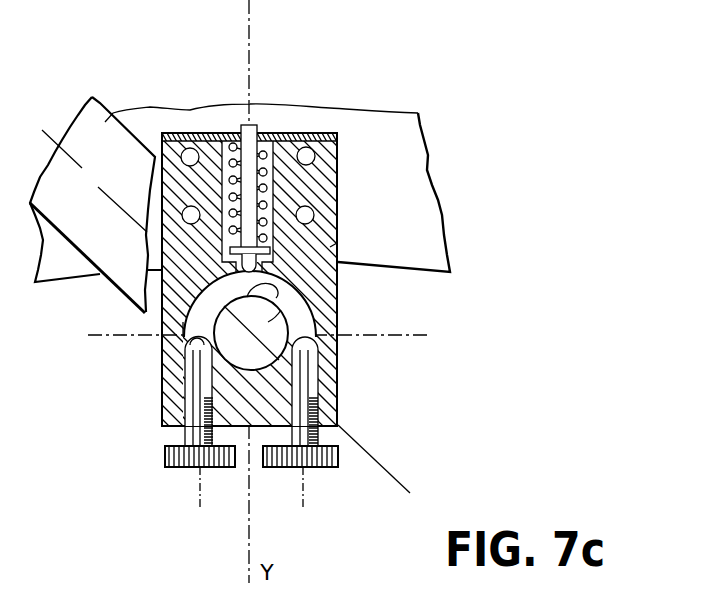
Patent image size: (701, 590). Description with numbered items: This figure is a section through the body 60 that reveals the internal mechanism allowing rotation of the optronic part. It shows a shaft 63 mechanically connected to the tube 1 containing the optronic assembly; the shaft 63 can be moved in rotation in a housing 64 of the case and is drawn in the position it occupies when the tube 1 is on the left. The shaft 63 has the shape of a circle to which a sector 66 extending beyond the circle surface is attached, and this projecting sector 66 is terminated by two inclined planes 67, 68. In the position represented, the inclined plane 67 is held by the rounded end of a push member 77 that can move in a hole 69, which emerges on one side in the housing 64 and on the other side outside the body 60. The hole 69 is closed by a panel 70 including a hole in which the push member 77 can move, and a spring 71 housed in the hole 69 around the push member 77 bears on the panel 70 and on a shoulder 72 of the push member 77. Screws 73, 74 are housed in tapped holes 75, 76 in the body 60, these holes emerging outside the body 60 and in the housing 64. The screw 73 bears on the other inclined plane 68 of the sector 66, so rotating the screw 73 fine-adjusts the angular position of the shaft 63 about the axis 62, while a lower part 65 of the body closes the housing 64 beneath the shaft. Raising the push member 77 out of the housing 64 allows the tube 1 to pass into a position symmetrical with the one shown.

The tube 1 is at (106, 125).
The body 60 is at (338, 370).
The axis 62 is at (247, 435).
The shaft 63 is at (300, 328).
The housing 64 is at (316, 287).
The lower clamp piece 65 is at (183, 378).
The sector 66 is at (183, 322).
The inclined plane 67 is at (330, 247).
The inclined plane 68 is at (205, 352).
The hole 69 is at (340, 109).
The panel 70 is at (197, 130).
The spring 71 is at (283, 131).
The shoulder 72 is at (163, 278).
The screw 73 is at (173, 468).
The screw 74 is at (334, 468).
The tapped hole 75 is at (166, 416).
The tapped hole 76 is at (330, 408).
The push member 77 is at (258, 127).